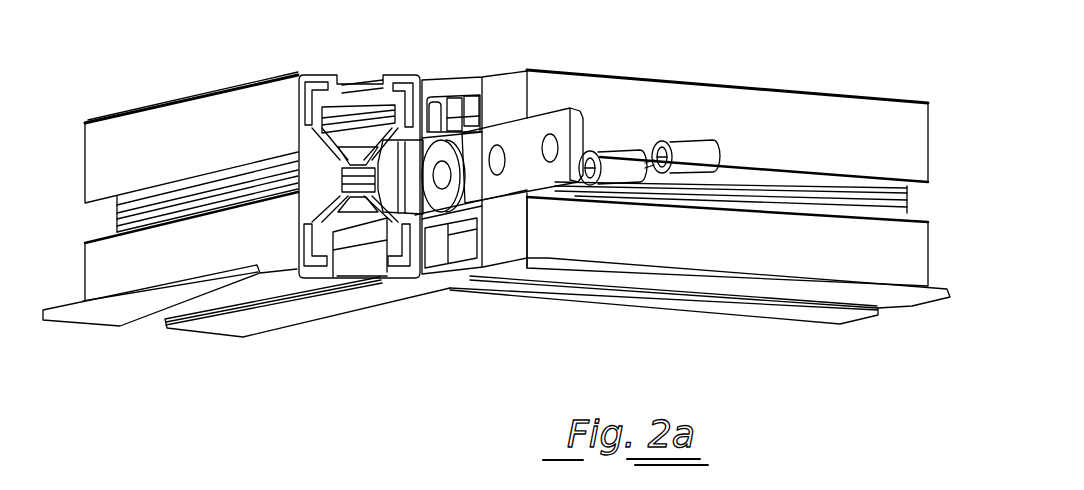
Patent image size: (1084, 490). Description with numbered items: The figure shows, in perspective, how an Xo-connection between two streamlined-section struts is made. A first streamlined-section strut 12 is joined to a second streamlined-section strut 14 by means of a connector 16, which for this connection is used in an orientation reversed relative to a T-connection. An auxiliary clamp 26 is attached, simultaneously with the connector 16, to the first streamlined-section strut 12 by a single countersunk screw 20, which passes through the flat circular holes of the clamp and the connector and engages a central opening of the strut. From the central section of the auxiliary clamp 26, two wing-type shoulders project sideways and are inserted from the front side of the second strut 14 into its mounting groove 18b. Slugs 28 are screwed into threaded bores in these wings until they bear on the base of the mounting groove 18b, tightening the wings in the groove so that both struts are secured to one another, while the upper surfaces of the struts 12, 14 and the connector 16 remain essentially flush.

The first streamlined-section strut 12 is at (825, 262).
The second streamlined-section strut 14 is at (125, 277).
The connector 16 is at (496, 258).
The mounting groove 18b is at (428, 140).
The countersunk screw 20 is at (442, 200).
The auxiliary clamp 26 is at (535, 126).
The slugs 28 is at (615, 163).